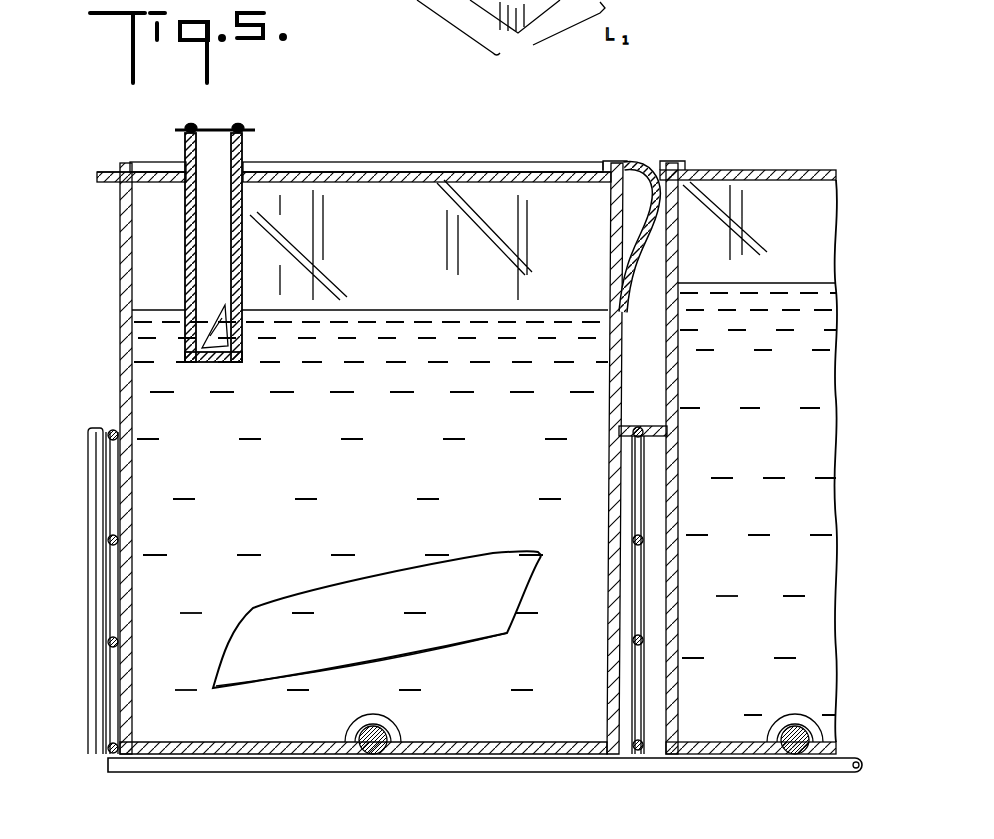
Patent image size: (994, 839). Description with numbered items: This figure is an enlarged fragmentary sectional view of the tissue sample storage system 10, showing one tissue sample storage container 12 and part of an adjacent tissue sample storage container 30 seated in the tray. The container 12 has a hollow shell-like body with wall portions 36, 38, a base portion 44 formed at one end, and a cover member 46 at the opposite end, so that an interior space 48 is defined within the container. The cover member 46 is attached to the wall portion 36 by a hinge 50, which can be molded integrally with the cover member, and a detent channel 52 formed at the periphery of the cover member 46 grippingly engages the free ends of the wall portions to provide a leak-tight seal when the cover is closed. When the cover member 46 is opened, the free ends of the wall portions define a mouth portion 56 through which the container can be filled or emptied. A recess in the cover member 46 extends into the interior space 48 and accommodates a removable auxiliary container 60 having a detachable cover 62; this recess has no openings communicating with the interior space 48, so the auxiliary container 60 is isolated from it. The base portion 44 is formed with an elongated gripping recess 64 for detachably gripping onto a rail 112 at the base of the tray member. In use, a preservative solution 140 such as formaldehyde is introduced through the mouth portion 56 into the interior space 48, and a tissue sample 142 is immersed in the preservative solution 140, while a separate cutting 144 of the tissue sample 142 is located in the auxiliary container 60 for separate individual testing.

The tissue sample storage system 10 is at (808, 92).
The tissue sample storage container 12 is at (118, 208).
The tissue sample storage container 30 is at (790, 167).
The wall portion 36 is at (620, 378).
The wall portion 38 is at (120, 250).
The base portion 44 is at (236, 745).
The cover member 46 is at (480, 175).
The interior space 48 is at (392, 267).
The hinge 50 is at (640, 165).
The detent channel 52 is at (128, 165).
The mouth portion 56 is at (400, 173).
The auxiliary container 60 is at (240, 146).
The detachable cover 62 is at (213, 130).
The gripping recess 64 is at (392, 728).
The rail 112 is at (374, 756).
The preservative solution 140 is at (414, 482).
The tissue sample 142 is at (392, 650).
The cutting 144 is at (225, 363).